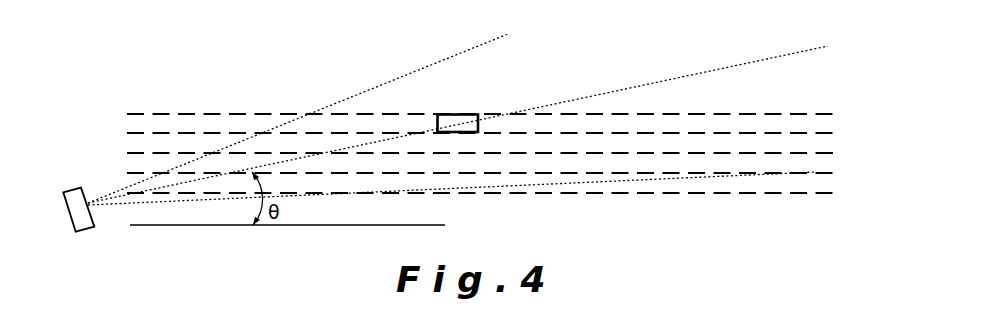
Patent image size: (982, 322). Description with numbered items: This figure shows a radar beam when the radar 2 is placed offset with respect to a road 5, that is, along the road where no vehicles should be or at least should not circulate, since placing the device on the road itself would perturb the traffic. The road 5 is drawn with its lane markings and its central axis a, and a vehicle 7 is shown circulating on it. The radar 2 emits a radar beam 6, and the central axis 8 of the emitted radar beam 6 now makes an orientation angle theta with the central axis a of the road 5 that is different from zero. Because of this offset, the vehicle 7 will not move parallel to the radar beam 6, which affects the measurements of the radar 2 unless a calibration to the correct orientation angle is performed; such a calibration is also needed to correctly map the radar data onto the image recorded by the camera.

The radar 2 is at (68, 189).
The road 5 is at (480, 153).
The emitted radar beam 6 is at (612, 183).
The vehicle 7 is at (460, 115).
The central axis of the radar beam 8 is at (790, 58).
The central axis of the road a is at (823, 148).